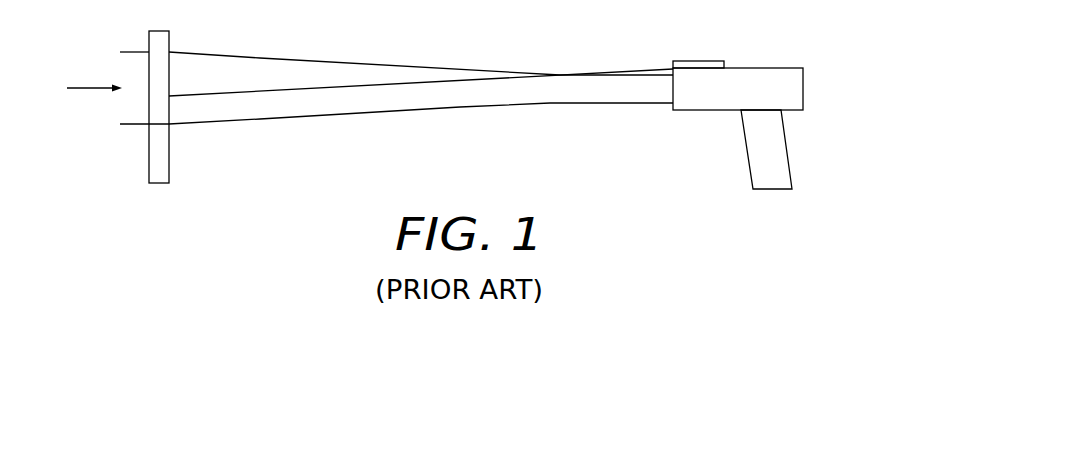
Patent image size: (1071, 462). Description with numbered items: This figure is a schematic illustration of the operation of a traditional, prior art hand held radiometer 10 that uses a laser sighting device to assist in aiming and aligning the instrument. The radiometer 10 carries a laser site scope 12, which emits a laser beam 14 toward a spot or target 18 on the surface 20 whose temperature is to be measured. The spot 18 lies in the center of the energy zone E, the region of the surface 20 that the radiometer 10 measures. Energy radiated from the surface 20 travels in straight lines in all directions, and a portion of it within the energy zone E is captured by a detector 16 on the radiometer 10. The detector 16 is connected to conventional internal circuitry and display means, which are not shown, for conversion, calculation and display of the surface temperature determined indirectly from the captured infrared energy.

The radiometer 10 is at (816, 156).
The laser site scope 12 is at (700, 61).
The laser beam 14 is at (620, 70).
The detector 16 is at (672, 92).
The spot 18 is at (169, 92).
The surface 20 is at (149, 160).